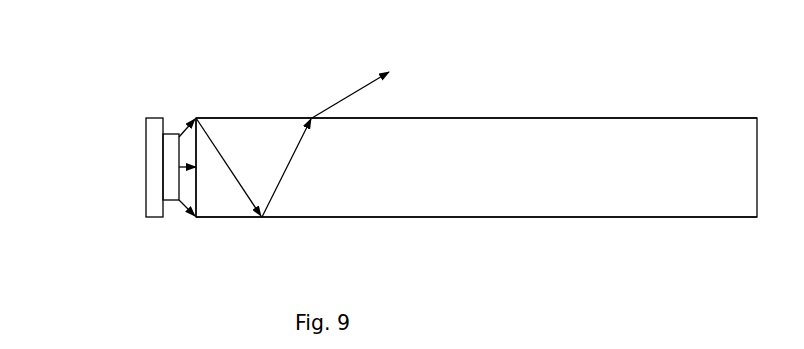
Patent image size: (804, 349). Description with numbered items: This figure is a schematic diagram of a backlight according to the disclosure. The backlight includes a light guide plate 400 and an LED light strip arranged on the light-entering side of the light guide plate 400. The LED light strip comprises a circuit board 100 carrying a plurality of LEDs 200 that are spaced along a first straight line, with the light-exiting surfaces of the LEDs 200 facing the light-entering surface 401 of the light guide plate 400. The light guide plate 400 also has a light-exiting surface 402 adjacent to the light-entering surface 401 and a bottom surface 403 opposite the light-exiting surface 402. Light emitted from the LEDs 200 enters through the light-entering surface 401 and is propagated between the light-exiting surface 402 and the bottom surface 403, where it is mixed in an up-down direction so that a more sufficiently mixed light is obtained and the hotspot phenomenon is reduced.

The circuit board 100 is at (153, 150).
The LEDs 200 is at (168, 192).
The light guide plate 400 is at (502, 142).
The light-entering surface 401 is at (195, 152).
The light-exiting surface 402 is at (405, 118).
The bottom surface 403 is at (410, 217).